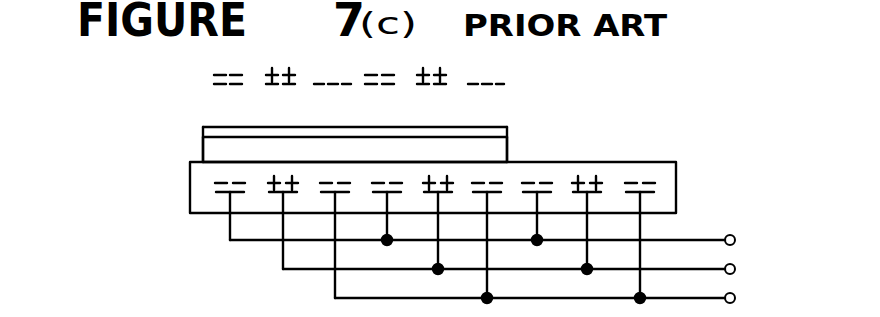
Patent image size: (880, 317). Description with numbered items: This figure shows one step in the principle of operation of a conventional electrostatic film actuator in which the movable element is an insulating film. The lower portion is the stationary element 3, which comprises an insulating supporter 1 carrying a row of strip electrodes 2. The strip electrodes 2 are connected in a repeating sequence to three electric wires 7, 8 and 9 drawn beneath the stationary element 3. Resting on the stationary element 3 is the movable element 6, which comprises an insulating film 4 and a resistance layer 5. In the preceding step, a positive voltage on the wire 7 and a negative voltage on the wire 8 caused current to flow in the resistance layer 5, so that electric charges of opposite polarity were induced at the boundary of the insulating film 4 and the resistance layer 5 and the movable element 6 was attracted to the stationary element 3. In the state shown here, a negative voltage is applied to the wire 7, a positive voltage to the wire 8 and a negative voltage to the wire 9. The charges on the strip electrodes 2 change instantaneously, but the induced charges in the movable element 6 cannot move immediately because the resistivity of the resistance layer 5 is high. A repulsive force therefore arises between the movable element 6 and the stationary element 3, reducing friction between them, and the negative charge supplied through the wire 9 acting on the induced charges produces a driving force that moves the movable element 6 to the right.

The insulating supporter 1 is at (652, 203).
The strip electrodes 2 is at (660, 180).
The stationary element 3 is at (442, 189).
The insulating film 4 is at (551, 70).
The resistance layer 5 is at (490, 128).
The movable element 6 is at (361, 115).
The electric wire 7 is at (497, 224).
The electric wire 8 is at (524, 238).
The electric wire 9 is at (550, 253).